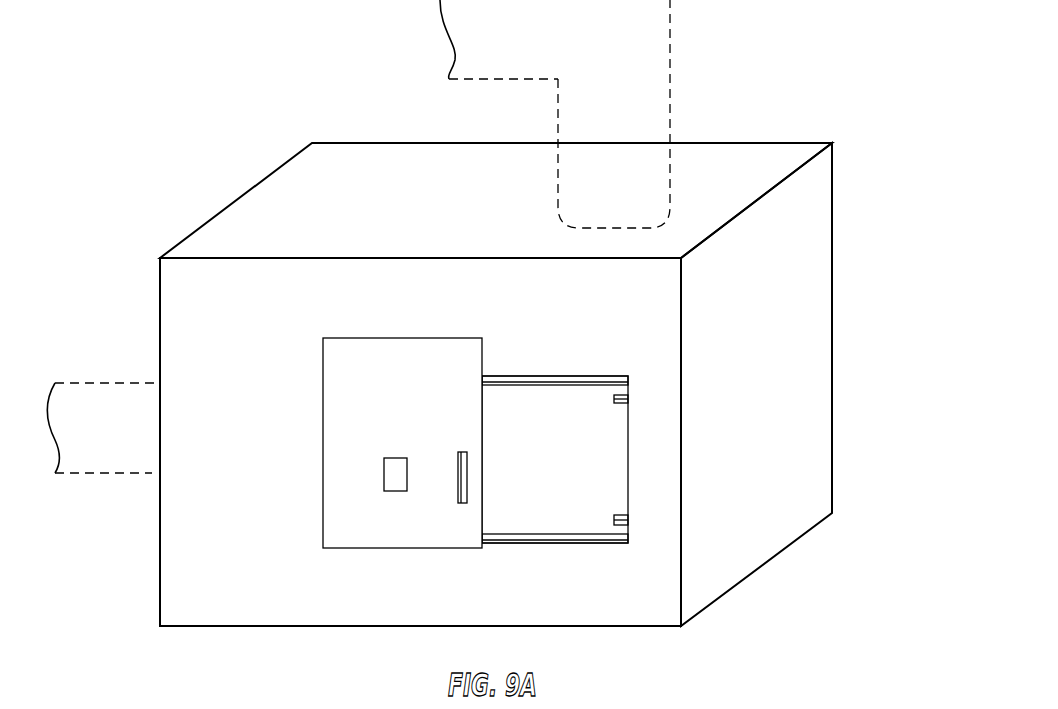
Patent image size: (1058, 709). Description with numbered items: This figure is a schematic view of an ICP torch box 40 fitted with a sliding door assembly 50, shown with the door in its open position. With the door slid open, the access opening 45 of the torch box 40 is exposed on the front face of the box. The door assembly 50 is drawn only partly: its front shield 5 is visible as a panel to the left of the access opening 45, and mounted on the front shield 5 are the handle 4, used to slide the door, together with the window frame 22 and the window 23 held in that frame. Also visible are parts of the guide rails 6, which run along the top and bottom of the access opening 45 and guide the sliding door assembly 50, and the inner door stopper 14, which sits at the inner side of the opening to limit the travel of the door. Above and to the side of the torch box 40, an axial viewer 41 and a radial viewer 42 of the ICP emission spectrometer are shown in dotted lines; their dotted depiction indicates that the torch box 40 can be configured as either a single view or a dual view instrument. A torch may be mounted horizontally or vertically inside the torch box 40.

The torch box 40 is at (860, 284).
The axial viewer 41 is at (86, 458).
The radial viewer 42 is at (653, 86).
The sliding door assembly 50 is at (371, 578).
The access opening 45 is at (570, 460).
The guide rails 6 is at (578, 382).
The inner door stopper 14 is at (617, 404).
The front shield 5 is at (417, 360).
The window frame 22 is at (383, 473).
The window 23 is at (392, 478).
The handle 4 is at (457, 493).